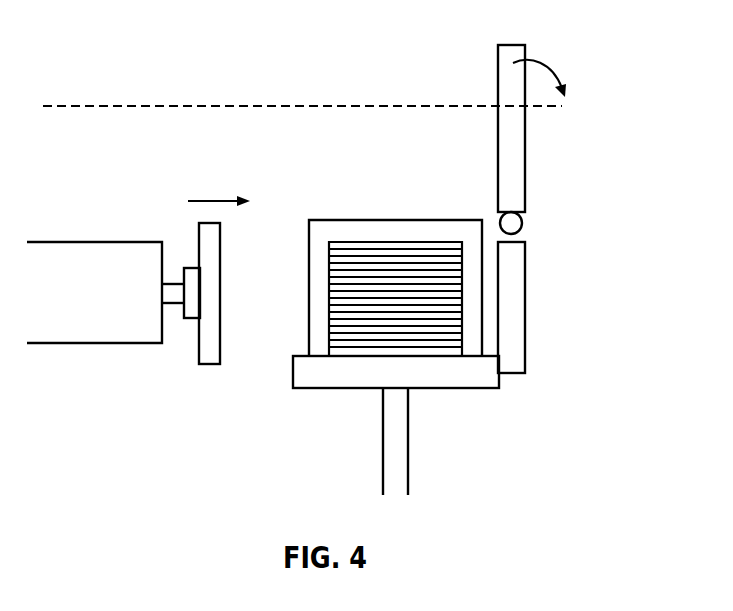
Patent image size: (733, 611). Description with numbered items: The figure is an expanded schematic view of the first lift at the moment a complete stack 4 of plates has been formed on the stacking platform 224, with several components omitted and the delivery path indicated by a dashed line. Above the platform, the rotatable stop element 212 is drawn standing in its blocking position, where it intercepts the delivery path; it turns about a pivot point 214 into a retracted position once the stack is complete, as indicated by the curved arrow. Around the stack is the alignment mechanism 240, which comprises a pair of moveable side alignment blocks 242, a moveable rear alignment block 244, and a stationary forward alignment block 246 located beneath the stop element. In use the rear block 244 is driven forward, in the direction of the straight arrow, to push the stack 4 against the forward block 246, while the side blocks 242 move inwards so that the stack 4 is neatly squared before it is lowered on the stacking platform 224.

The stack 4 is at (406, 258).
The rotatable stop element 212 is at (518, 156).
The pivot point 214 is at (515, 226).
The stacking platform 224 is at (343, 377).
The alignment mechanism 240 is at (582, 381).
The moveable side alignment blocks 242 is at (323, 227).
The moveable rear alignment block 244 is at (210, 363).
The stationary forward alignment block 246 is at (518, 300).